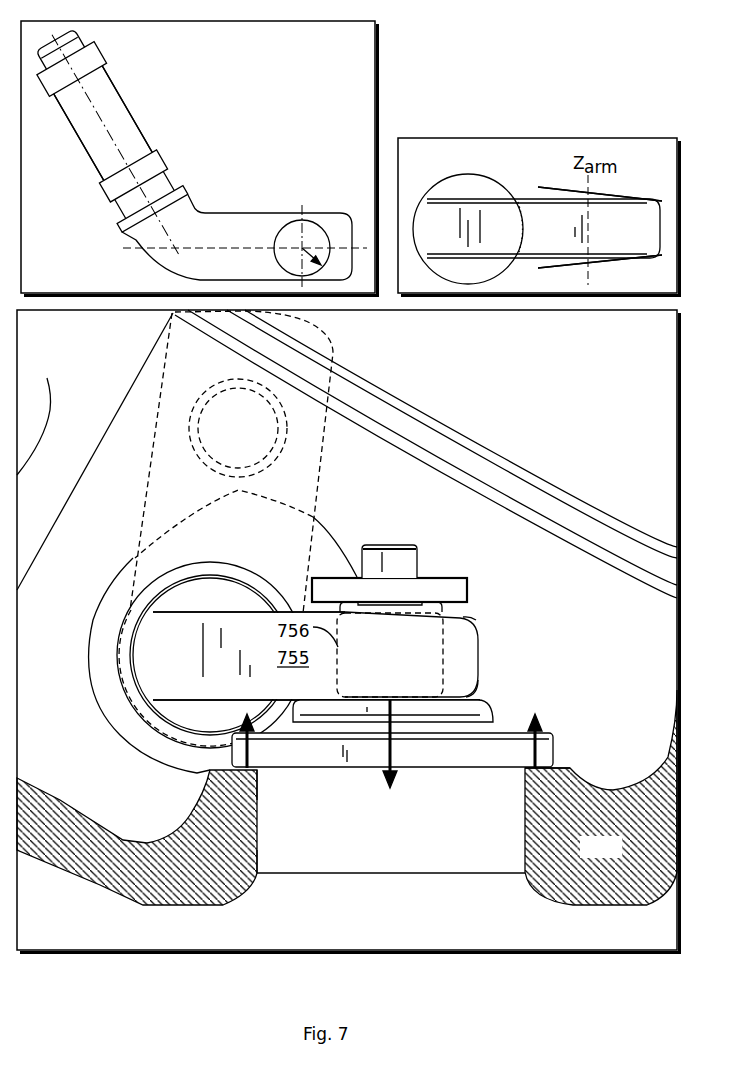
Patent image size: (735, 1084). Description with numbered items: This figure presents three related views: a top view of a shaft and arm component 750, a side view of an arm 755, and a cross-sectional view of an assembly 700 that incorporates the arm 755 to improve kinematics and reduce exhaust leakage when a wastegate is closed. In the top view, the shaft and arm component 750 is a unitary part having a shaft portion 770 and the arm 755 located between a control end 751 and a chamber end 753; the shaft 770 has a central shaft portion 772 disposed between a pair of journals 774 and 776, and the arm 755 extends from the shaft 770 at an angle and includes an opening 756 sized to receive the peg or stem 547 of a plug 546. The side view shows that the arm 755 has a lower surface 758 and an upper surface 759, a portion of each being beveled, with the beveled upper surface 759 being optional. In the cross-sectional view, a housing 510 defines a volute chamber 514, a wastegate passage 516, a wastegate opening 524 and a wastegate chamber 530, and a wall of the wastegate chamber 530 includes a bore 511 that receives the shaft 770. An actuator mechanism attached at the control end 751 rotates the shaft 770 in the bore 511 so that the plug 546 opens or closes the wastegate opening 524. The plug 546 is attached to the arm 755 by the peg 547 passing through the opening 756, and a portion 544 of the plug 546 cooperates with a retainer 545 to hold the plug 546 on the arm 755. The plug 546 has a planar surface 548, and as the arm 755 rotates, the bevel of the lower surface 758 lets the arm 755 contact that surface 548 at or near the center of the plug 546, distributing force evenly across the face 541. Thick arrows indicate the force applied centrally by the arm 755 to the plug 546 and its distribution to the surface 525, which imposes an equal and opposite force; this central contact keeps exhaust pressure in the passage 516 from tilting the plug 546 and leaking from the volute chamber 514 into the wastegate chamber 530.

The assembly 700 is at (74, 341).
The shaft and arm component 750 is at (354, 59).
The shaft portion 770 is at (165, 112).
The control end 751 is at (78, 46).
The journal 776 is at (110, 77).
The central shaft portion 772 is at (135, 152).
The journal 774 is at (173, 177).
The arm 755 is at (250, 242).
The opening 756 is at (292, 222).
The chamber end 753 is at (480, 653).
The upper surface 759 is at (463, 617).
The lower surface 758 is at (473, 685).
The bore 511 is at (133, 643).
The wastegate chamber 530 is at (622, 635).
The portion of the plug 544 is at (403, 543).
The retainer 545 is at (457, 577).
The peg or stem 547 is at (410, 665).
The surface of the plug 548 is at (480, 702).
The face of the plug 541 is at (430, 768).
The plug 546 is at (548, 735).
The surface 525 is at (557, 767).
The wastegate opening 524 is at (258, 773).
The wastegate passage 516 is at (258, 873).
The volute chamber 514 is at (492, 915).
The housing 510 is at (617, 857).